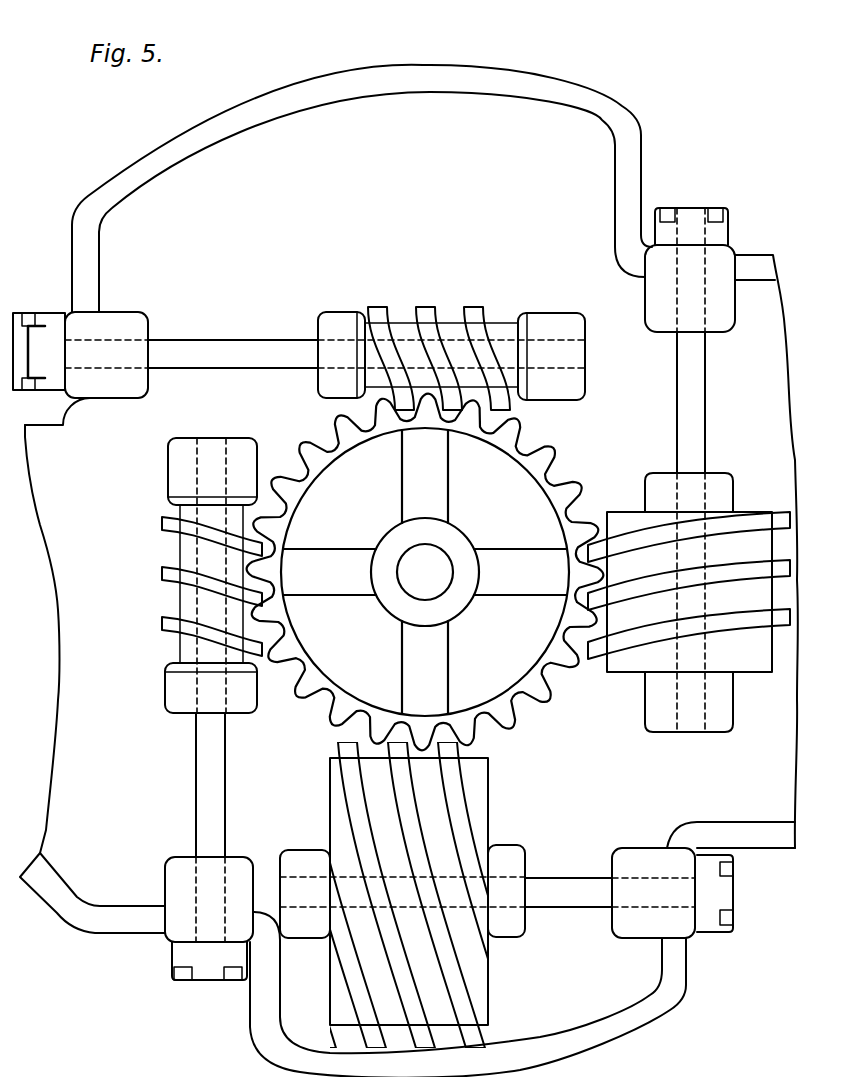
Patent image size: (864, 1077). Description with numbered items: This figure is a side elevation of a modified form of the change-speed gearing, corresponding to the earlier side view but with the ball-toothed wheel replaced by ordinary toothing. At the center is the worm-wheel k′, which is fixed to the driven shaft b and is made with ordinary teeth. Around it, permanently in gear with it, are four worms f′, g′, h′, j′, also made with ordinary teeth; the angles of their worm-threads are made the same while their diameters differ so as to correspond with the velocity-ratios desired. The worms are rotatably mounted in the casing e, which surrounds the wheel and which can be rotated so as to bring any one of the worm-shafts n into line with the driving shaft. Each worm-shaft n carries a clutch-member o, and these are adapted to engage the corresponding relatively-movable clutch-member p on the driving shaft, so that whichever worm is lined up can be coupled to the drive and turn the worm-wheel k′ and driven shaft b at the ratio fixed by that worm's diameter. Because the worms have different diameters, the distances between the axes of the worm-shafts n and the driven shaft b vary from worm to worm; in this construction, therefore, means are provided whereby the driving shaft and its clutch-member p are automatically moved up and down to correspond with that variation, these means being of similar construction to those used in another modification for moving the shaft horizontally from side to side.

The driven shaft b is at (425, 572).
The casing e is at (409, 571).
The worm f′ is at (445, 330).
The worm g′ is at (774, 626).
The worm h′ is at (478, 772).
The worm j′ is at (160, 578).
The worm-wheel k′ is at (543, 480).
The worm-shaft n is at (238, 344).
The clutch-member o is at (386, 594).
The clutch-member p is at (19, 313).